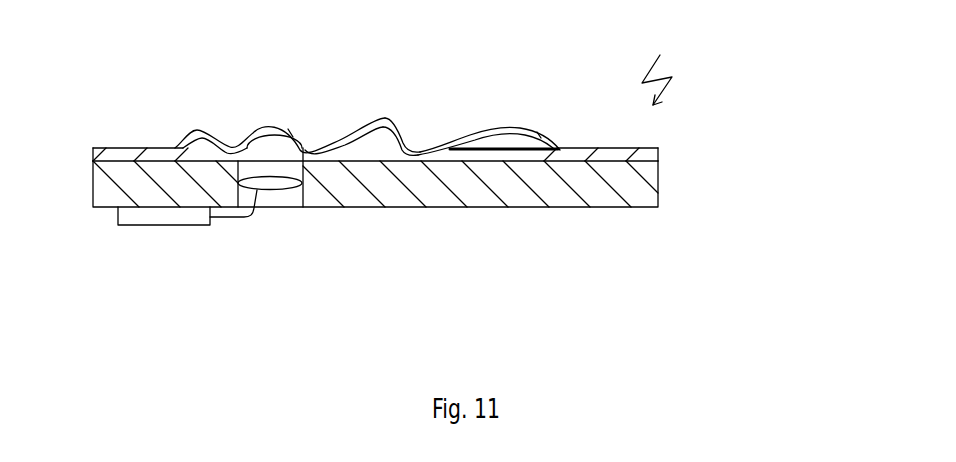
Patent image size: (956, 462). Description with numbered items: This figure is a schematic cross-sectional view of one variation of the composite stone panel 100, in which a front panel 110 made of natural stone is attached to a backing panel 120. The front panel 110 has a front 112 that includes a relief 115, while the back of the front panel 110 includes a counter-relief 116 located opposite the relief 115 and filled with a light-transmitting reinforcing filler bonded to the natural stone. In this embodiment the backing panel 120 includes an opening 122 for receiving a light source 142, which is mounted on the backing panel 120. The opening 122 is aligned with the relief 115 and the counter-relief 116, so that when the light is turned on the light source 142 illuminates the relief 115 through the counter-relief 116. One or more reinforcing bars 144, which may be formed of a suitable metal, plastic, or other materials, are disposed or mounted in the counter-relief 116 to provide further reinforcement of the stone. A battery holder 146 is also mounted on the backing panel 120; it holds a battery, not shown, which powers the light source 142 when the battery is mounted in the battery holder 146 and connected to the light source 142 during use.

The composite stone panel 100 is at (685, 52).
The front panel 110 is at (658, 155).
The front 112 is at (135, 148).
The relief 115 is at (402, 138).
The counter-relief 116 is at (522, 150).
The backing panel 120 is at (658, 195).
The opening 122 is at (280, 208).
The light source 142 is at (274, 192).
The reinforcing bars 144 is at (247, 160).
The battery holder 146 is at (166, 226).